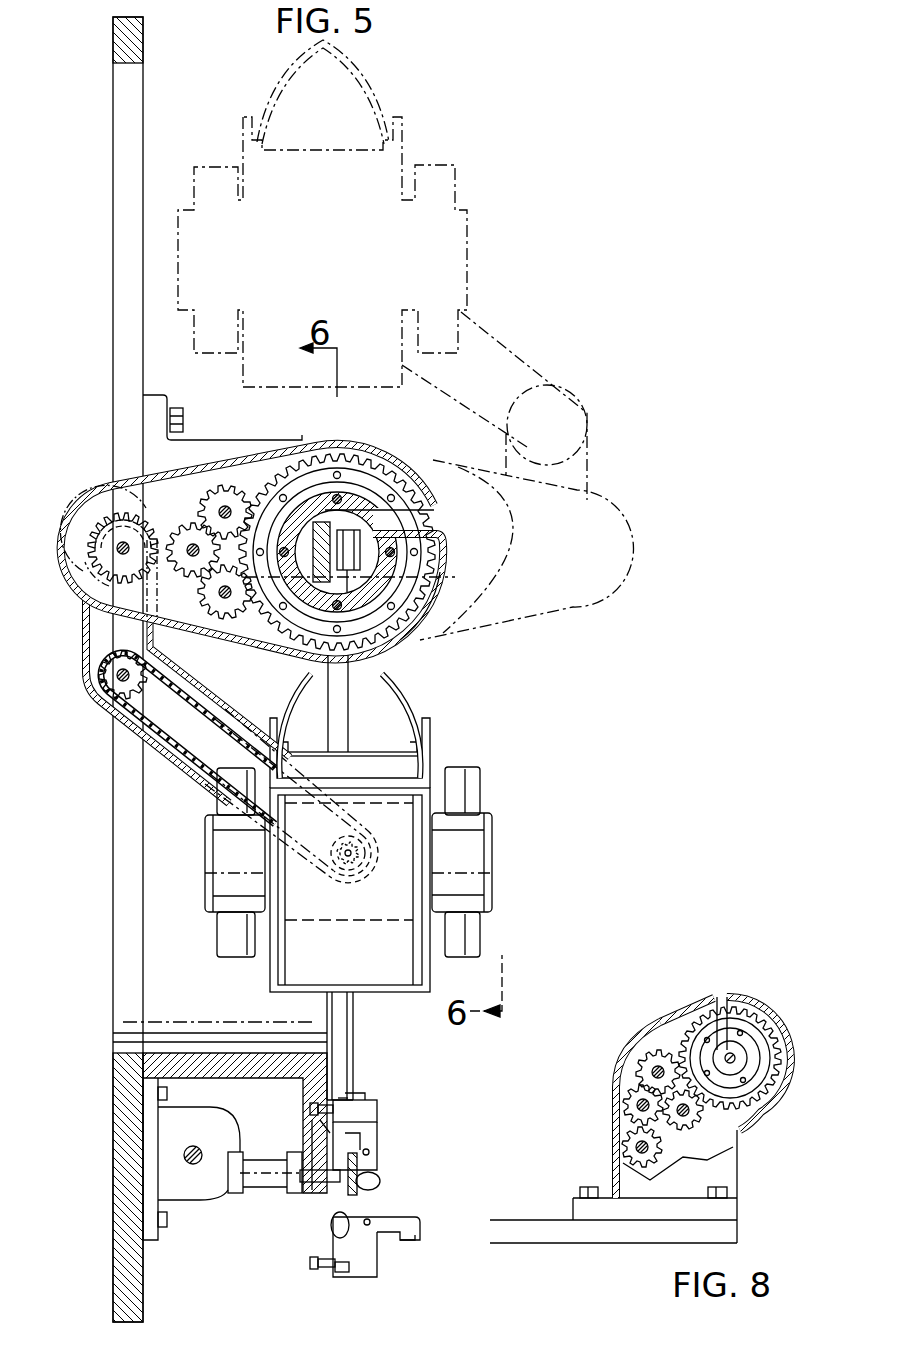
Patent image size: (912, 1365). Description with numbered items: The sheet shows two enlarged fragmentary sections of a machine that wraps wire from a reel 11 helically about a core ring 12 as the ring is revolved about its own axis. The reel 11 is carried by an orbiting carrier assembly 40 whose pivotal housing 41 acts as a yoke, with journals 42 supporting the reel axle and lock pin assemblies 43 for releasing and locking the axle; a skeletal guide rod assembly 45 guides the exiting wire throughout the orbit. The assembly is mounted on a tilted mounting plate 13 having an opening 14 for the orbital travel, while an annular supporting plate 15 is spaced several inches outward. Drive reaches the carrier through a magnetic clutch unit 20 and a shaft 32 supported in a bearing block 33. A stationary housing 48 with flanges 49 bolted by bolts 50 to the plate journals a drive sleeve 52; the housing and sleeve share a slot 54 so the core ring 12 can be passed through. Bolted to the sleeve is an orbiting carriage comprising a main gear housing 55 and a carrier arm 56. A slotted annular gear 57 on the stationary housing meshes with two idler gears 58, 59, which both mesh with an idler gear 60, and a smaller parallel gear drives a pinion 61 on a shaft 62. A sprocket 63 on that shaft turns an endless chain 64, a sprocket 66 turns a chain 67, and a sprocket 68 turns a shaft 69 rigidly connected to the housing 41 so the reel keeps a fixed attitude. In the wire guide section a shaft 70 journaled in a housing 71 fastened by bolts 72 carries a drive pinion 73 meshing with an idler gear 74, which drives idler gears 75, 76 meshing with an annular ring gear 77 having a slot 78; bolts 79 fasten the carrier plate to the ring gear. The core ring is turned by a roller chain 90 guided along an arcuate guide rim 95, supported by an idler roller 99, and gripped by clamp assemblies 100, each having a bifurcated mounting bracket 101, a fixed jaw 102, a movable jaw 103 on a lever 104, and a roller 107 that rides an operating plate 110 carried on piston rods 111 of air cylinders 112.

In FIG. 5, the reel 11 is at (300, 962).
In FIG. 5, the core ring 12 is at (354, 1015).
In FIG. 8, the core ring 12 is at (737, 1058).
In FIG. 5, the mounting plate 13 is at (125, 1082).
In FIG. 8, the mounting plate 13 is at (533, 1220).
In FIG. 5, the opening 14 is at (122, 1033).
In FIG. 5, the annular supporting plate 15 is at (318, 572).
In FIG. 5, the magnetic clutch unit 20 is at (78, 691).
In FIG. 5, the shaft 32 is at (202, 1163).
In FIG. 5, the bearing block 33 is at (218, 1122).
In FIG. 5, the orbiting carrier assembly 40 is at (381, 163).
In FIG. 5, the pivotal housing 41 is at (480, 938).
In FIG. 5, the journal 42 is at (208, 853).
In FIG. 5, the lock pin assembly 43 is at (222, 932).
In FIG. 5, the skeletal guide rod assembly 45 is at (405, 698).
In FIG. 5, the stationary housing 48 is at (430, 613).
In FIG. 5, the flange 49 is at (152, 395).
In FIG. 5, the bolt 50 is at (182, 412).
In FIG. 5, the drive sleeve 52 is at (397, 553).
In FIG. 5, the slot 54 is at (383, 525).
In FIG. 5, the main gear housing 55 is at (224, 476).
In FIG. 5, the carrier arm 56 is at (227, 728).
In FIG. 5, the annular gear 57 is at (378, 462).
In FIG. 5, the idler gear 58 is at (232, 620).
In FIG. 5, the idler gear 59 is at (217, 490).
In FIG. 5, the idler gear 60 is at (188, 520).
In FIG. 5, the pinion 61 is at (84, 505).
In FIG. 5, the shaft 62 is at (108, 556).
In FIG. 5, the sprocket 63 is at (80, 598).
In FIG. 5, the endless chain 64 is at (91, 637).
In FIG. 5, the sprocket 66 is at (117, 712).
In FIG. 5, the chain 67 is at (163, 748).
In FIG. 5, the sprocket 68 is at (327, 875).
In FIG. 5, the shaft 69 is at (373, 883).
In FIG. 8, the shaft 70 is at (637, 1148).
In FIG. 8, the housing 71 is at (688, 1000).
In FIG. 8, the bolt 72 is at (583, 1188).
In FIG. 8, the drive pinion 73 is at (767, 1000).
In FIG. 8, the idler gear 74 is at (617, 1090).
In FIG. 8, the idler gear 75 is at (647, 1053).
In FIG. 8, the idler gear 76 is at (703, 1123).
In FIG. 8, the annular ring gear 77 is at (787, 1083).
In FIG. 8, the slot 78 is at (722, 997).
In FIG. 8, the bolt 79 is at (783, 1033).
In FIG. 5, the roller chain 90 is at (310, 1108).
In FIG. 5, the arcuate guide rim 95 is at (322, 1122).
In FIG. 5, the idler roller 99 is at (393, 568).
In FIG. 5, the clamp assembly 100 is at (388, 1138).
In FIG. 5, the bifurcated mounting bracket 101 is at (377, 1132).
In FIG. 5, the fixed jaw 102 is at (335, 1098).
In FIG. 5, the movable jaw 103 is at (360, 1100).
In FIG. 5, the lever 104 is at (377, 1108).
In FIG. 5, the roller 107 is at (382, 1181).
In FIG. 5, the operating plate 110 is at (358, 1158).
In FIG. 5, the piston rod 111 is at (320, 1182).
In FIG. 5, the air cylinder 112 is at (262, 1190).